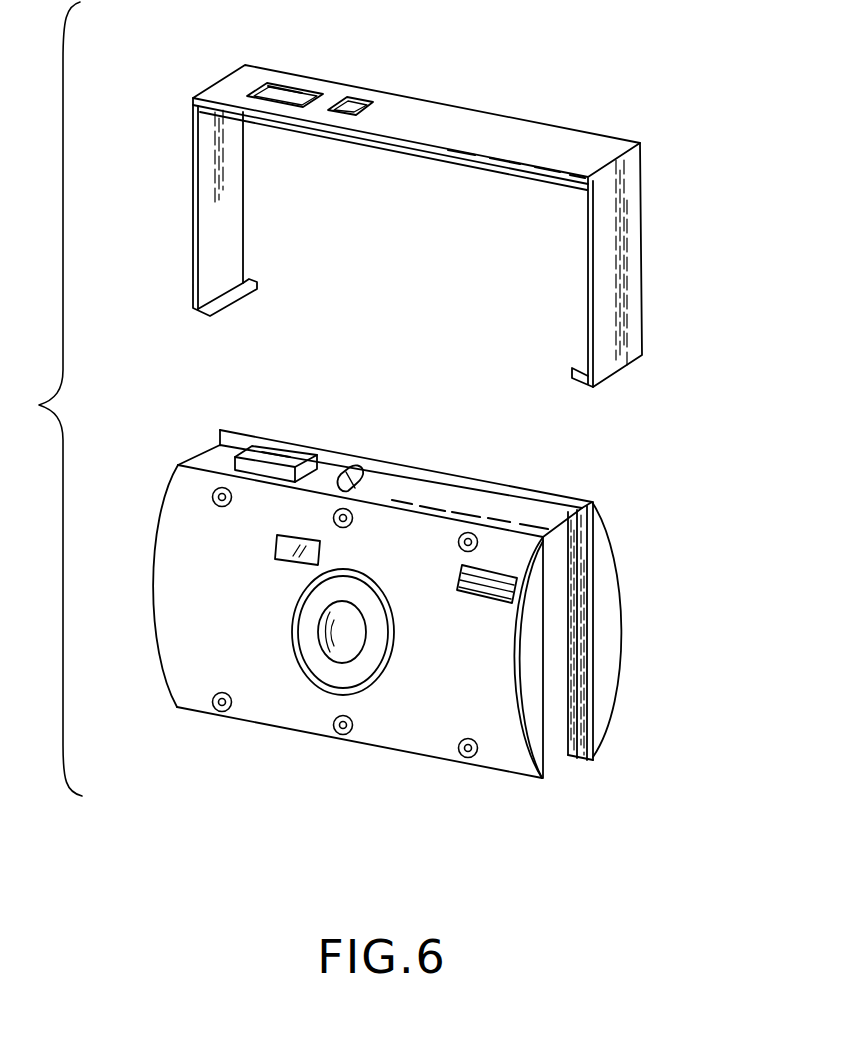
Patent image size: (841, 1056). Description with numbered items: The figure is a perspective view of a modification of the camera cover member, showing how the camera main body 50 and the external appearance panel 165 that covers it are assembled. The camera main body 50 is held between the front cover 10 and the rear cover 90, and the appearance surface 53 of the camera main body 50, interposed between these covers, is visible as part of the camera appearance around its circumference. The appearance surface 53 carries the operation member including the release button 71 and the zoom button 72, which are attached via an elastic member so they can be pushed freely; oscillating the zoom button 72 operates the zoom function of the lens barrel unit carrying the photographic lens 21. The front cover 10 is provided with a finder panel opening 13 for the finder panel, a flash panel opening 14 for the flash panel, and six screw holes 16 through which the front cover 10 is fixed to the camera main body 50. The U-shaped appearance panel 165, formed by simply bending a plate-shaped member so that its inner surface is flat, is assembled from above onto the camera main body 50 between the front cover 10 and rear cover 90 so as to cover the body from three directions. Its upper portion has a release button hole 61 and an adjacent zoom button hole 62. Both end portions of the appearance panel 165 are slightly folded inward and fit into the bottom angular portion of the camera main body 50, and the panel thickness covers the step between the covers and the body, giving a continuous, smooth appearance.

The appearance panel 165 is at (632, 203).
The release button hole 61 is at (283, 90).
The zoom button hole 62 is at (353, 103).
The front cover 10 is at (418, 743).
The appearance surface 53 is at (475, 502).
The release button 71 is at (278, 458).
The zoom button 72 is at (352, 480).
The finder panel opening 13 is at (277, 538).
The photographic lens 21 is at (333, 667).
The flash panel opening 14 is at (512, 590).
The camera main body 50 is at (552, 758).
The rear cover 90 is at (612, 647).
The screw hole 16 is at (215, 708).